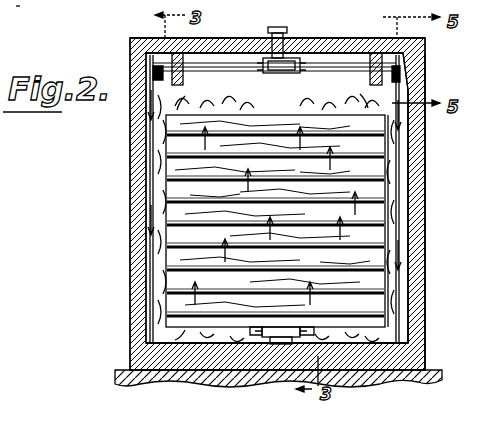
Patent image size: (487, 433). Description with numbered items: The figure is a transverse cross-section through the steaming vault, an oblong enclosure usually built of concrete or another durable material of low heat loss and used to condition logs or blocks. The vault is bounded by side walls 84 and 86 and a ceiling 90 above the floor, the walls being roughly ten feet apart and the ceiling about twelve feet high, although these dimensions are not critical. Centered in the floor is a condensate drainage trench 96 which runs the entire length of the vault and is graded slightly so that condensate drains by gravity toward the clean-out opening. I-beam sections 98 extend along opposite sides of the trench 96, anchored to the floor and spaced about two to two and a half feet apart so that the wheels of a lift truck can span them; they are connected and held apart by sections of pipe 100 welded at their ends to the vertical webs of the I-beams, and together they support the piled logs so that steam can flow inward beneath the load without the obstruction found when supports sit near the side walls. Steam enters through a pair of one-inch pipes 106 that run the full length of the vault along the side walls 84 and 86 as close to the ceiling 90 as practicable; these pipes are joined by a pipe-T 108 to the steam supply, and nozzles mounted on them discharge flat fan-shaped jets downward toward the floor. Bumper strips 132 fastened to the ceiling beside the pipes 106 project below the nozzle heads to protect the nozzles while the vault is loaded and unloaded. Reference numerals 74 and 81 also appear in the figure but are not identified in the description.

The apparatus 74 is at (10, 7).
The inlet conduit 81 is at (282, 27).
The side wall 84 is at (130, 276).
The side wall 86 is at (425, 233).
The ceiling 90 is at (360, 38).
The condensate drainage trench 96 is at (258, 352).
The I-beam sections 98 is at (262, 328).
The sections of pipe 100 is at (275, 327).
The pipes 106 is at (152, 68).
The pipe-T 108 is at (271, 74).
The bumper strips 132 is at (173, 106).